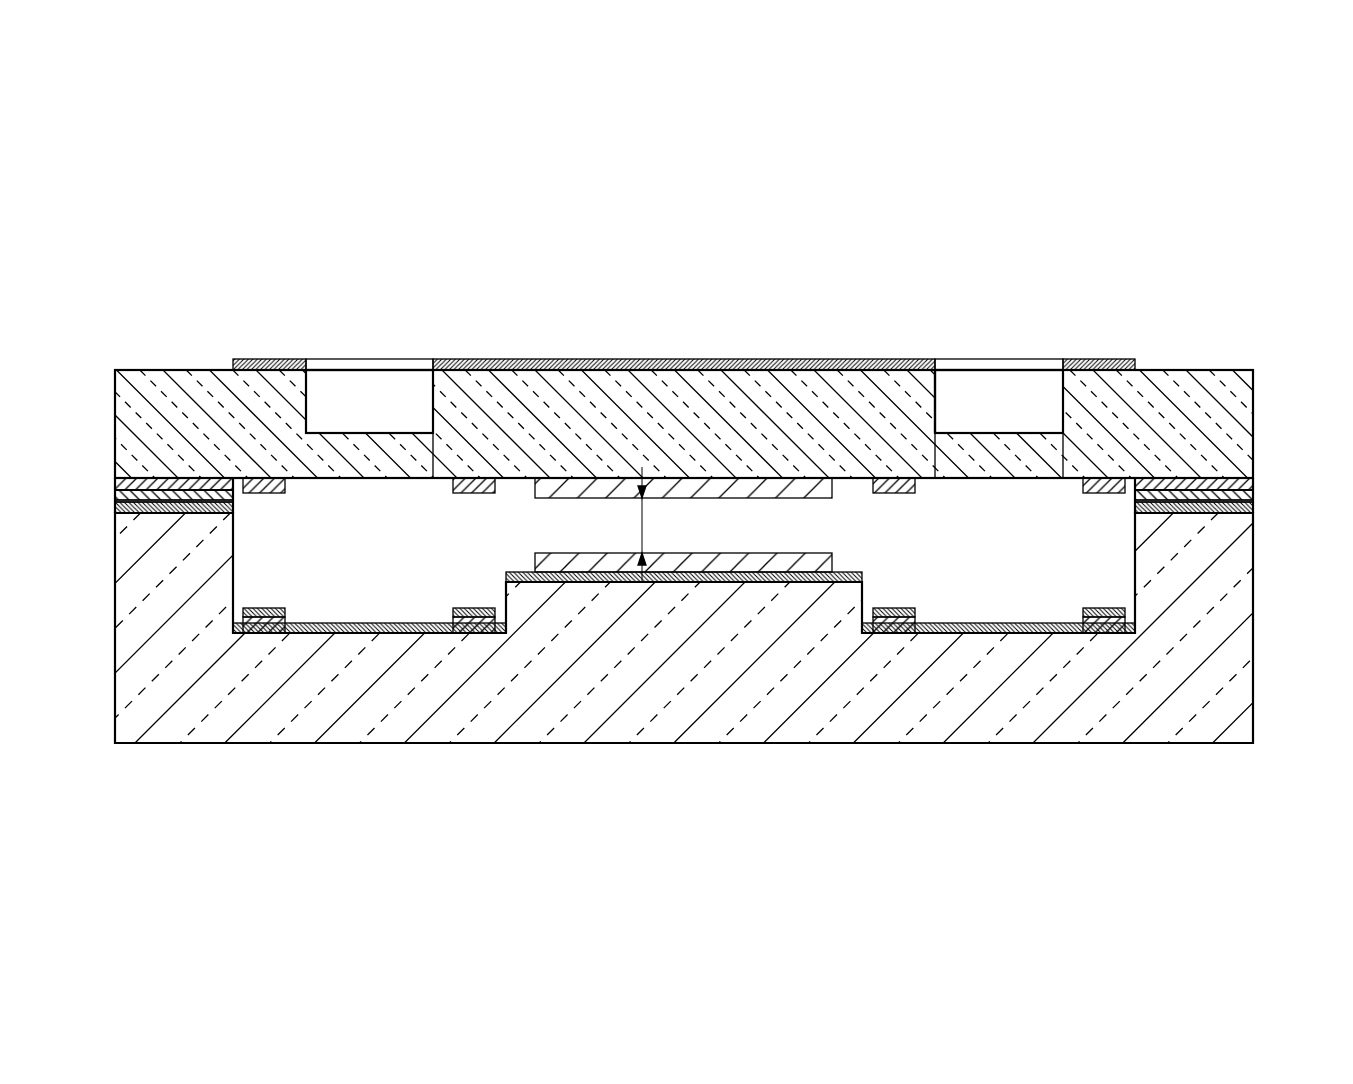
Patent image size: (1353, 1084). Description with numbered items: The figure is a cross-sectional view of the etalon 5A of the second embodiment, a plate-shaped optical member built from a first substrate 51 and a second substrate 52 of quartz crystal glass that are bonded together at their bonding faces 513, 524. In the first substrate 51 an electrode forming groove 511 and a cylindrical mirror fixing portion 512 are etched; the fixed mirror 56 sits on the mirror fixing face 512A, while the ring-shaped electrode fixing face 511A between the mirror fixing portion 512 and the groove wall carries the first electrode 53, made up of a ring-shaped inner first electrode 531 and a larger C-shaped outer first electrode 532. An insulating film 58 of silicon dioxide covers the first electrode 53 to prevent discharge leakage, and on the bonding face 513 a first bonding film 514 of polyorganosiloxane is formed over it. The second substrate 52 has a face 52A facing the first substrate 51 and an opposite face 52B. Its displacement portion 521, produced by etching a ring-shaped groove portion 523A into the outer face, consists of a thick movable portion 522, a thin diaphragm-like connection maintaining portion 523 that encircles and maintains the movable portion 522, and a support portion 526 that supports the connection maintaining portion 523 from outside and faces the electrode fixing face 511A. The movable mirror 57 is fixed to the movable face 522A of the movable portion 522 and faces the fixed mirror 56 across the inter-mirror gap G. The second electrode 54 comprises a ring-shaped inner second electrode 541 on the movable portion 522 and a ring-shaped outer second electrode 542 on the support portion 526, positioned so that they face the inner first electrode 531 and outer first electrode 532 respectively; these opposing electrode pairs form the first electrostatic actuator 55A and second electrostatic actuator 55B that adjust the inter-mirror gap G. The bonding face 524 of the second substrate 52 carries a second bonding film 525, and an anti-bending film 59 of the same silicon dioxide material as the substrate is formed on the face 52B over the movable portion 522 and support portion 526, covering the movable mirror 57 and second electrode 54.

The etalon 5A is at (873, 214).
The first substrate 51 is at (1253, 597).
The electrode forming groove 511 is at (245, 633).
The electrode fixing face 511A is at (1020, 624).
The mirror fixing portion 512 is at (840, 597).
The mirror fixing face 512A is at (512, 583).
The bonding face 513 is at (1253, 507).
The first bonding film 514 is at (115, 495).
The second substrate 52 is at (1253, 423).
The face 52A is at (510, 479).
The face 52B is at (178, 369).
The displacement portion 521 is at (1033, 338).
The movable portion 522 is at (830, 385).
The movable face 522A is at (1007, 482).
The connection maintaining portion 523 is at (1010, 433).
The groove portion 523A is at (945, 378).
The bonding face 524 is at (1253, 483).
The second bonding film 525 is at (115, 483).
The support portion 526 is at (1163, 402).
The first electrode 53 is at (412, 803).
The inner first electrode 531 is at (472, 627).
The outer first electrode 532 is at (265, 628).
The second electrode 54 is at (427, 299).
The inner second electrode 541 is at (482, 478).
The outer second electrode 542 is at (272, 478).
The first electrostatic actuator 55A is at (955, 798).
The second electrostatic actuator 55B is at (1228, 798).
The fixed mirror 56 is at (770, 552).
The movable mirror 57 is at (722, 499).
The insulating film 58 is at (115, 507).
The anti-bending film 59 is at (597, 358).
The inter-mirror gap G is at (648, 524).